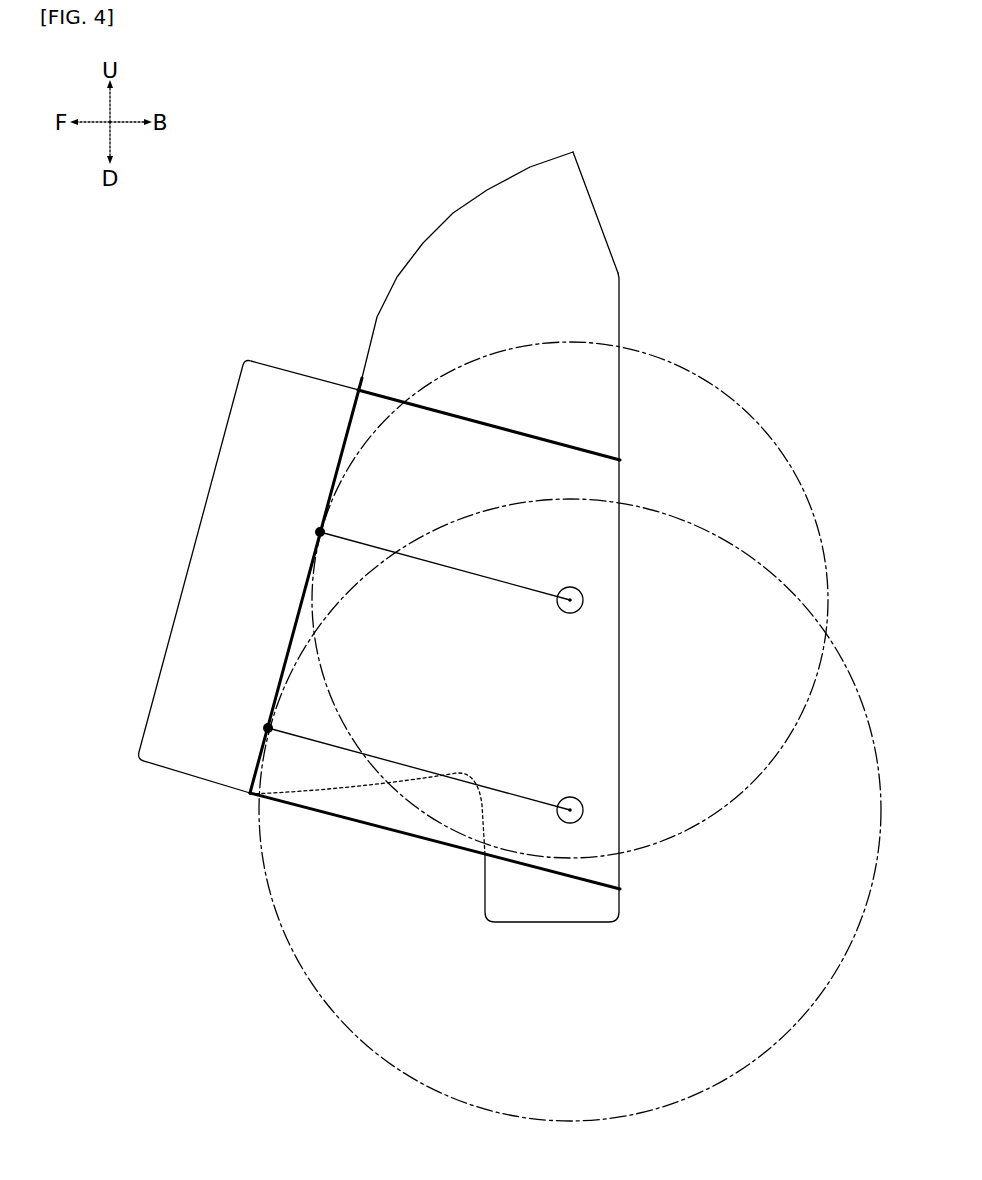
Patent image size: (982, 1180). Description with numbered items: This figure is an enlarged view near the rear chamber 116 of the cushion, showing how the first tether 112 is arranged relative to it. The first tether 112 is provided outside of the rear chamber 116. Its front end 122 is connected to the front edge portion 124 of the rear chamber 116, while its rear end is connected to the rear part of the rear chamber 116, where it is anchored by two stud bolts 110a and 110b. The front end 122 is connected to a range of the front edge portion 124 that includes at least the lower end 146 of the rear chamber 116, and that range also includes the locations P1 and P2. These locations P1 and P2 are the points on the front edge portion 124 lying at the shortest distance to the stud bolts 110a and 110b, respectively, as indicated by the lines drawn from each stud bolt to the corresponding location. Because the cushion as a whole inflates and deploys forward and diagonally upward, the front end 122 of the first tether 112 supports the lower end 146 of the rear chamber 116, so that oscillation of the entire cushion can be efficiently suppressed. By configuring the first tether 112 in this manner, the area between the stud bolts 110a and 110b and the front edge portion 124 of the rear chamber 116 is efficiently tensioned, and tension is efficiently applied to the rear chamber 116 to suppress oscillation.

The rear chamber 116 is at (350, 218).
The front end 122 is at (188, 550).
The front edge portion 124 is at (293, 632).
The first tether 112 is at (401, 834).
The lower end 146 is at (250, 796).
The stud bolt 110a is at (583, 600).
The stud bolt 110b is at (578, 796).
The location P1 is at (314, 531).
The location P2 is at (262, 727).